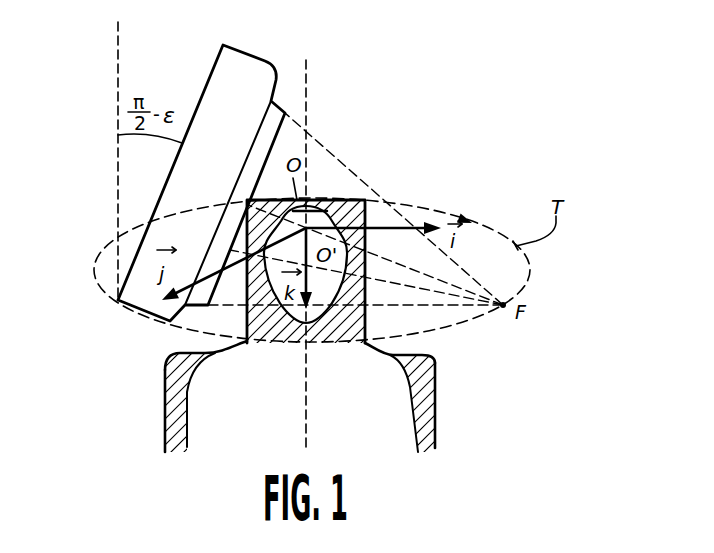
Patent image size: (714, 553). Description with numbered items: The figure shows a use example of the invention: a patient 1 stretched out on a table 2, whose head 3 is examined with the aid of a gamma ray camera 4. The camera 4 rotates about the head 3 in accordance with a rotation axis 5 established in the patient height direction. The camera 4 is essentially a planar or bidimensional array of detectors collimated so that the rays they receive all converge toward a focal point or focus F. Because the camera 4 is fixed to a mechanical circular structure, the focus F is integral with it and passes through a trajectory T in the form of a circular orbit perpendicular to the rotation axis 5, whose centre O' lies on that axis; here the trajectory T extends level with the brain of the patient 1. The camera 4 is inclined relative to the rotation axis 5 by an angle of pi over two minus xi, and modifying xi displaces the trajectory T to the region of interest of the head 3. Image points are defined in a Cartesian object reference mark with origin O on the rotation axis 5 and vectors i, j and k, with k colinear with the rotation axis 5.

The patient 1 is at (382, 352).
The table 2 is at (436, 405).
The head 3 is at (338, 197).
The gamma ray camera 4 is at (197, 118).
The rotation axis 5 is at (306, 80).